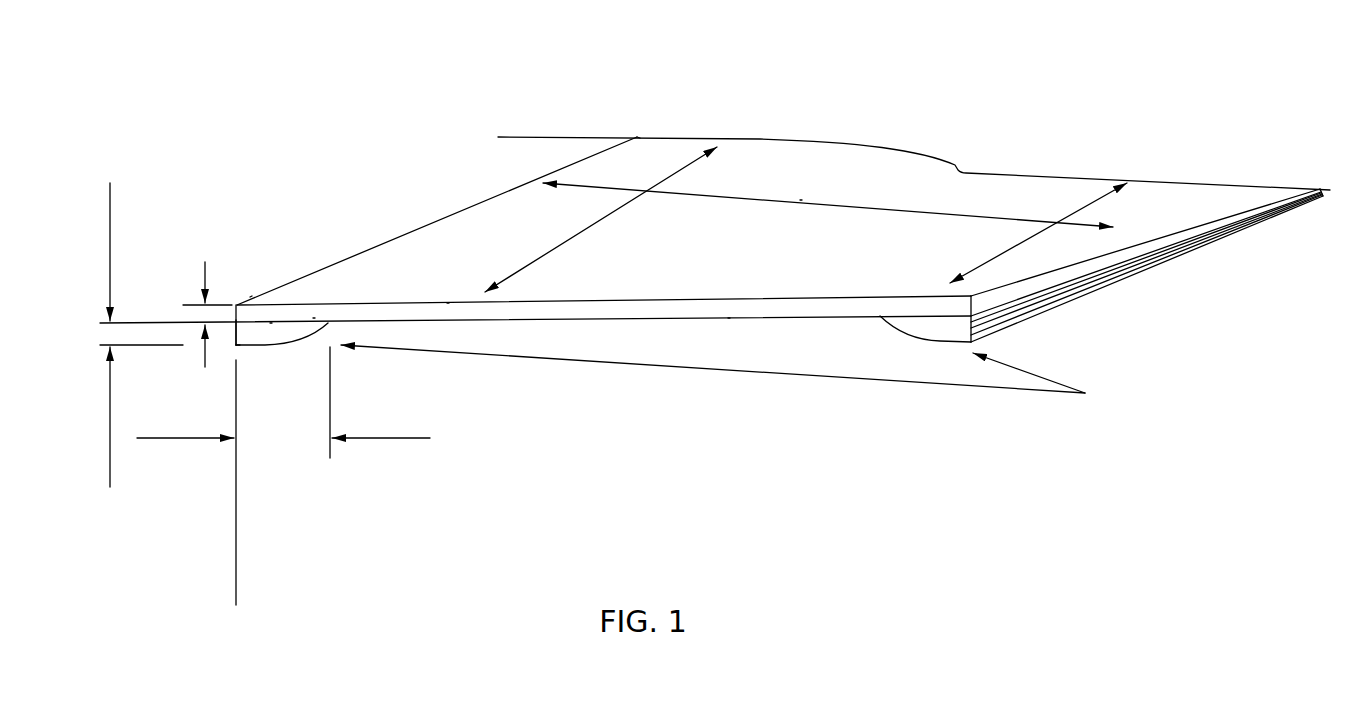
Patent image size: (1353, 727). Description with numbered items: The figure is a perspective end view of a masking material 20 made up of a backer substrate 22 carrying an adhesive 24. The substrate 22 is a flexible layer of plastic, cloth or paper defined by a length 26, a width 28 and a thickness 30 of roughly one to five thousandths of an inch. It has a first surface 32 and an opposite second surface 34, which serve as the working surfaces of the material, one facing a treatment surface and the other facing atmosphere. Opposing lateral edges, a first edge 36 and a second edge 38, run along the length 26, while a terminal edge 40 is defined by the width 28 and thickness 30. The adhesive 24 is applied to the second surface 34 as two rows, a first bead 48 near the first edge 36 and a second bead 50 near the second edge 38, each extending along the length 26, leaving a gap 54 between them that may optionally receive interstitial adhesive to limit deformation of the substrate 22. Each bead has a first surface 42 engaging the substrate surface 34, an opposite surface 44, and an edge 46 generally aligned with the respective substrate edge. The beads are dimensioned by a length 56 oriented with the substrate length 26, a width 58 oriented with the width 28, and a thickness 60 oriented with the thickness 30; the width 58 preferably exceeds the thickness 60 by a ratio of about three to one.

The masking material 20 is at (1200, 156).
The substrate 22 is at (734, 240).
The adhesive 24 is at (270, 328).
The length 26 is at (577, 235).
The width 28 is at (845, 208).
The thickness 30 is at (205, 262).
The first surface 32 is at (825, 260).
The second surface 34 is at (728, 318).
The first edge 36 is at (1047, 270).
The second edge 38 is at (250, 297).
The terminal edge 40 is at (447, 312).
The first surface of adhesive 42 is at (313, 320).
The second surface of adhesive 44 is at (273, 347).
The adhesive edge 46 is at (237, 345).
The first bead 48 is at (947, 330).
The second bead 50 is at (248, 347).
The gap 54 is at (557, 332).
The bead length 56 is at (1080, 207).
The bead width 58 is at (388, 440).
The bead thickness 60 is at (108, 457).